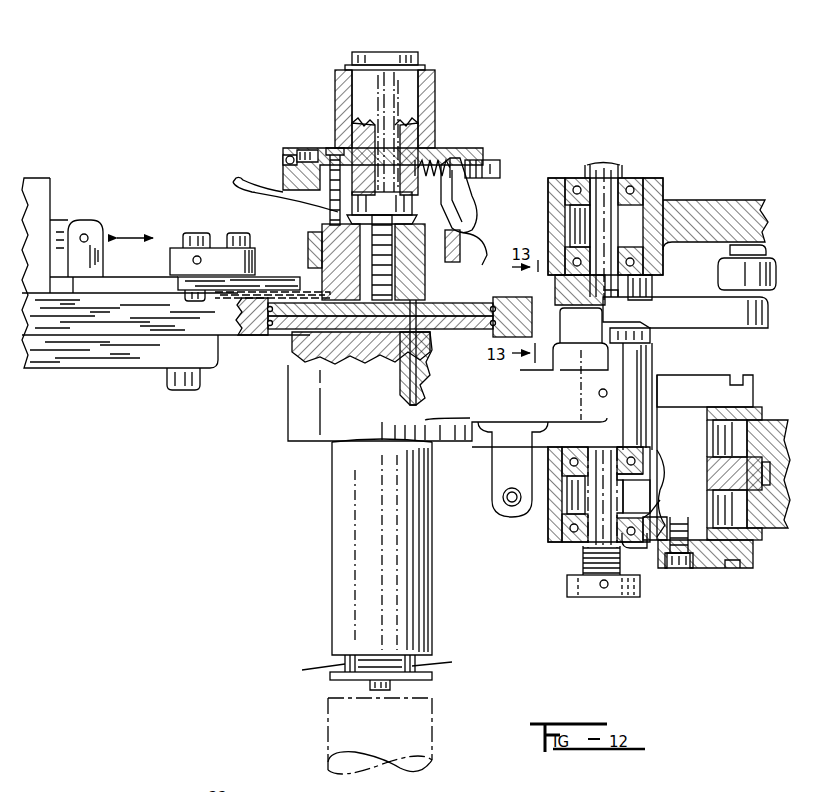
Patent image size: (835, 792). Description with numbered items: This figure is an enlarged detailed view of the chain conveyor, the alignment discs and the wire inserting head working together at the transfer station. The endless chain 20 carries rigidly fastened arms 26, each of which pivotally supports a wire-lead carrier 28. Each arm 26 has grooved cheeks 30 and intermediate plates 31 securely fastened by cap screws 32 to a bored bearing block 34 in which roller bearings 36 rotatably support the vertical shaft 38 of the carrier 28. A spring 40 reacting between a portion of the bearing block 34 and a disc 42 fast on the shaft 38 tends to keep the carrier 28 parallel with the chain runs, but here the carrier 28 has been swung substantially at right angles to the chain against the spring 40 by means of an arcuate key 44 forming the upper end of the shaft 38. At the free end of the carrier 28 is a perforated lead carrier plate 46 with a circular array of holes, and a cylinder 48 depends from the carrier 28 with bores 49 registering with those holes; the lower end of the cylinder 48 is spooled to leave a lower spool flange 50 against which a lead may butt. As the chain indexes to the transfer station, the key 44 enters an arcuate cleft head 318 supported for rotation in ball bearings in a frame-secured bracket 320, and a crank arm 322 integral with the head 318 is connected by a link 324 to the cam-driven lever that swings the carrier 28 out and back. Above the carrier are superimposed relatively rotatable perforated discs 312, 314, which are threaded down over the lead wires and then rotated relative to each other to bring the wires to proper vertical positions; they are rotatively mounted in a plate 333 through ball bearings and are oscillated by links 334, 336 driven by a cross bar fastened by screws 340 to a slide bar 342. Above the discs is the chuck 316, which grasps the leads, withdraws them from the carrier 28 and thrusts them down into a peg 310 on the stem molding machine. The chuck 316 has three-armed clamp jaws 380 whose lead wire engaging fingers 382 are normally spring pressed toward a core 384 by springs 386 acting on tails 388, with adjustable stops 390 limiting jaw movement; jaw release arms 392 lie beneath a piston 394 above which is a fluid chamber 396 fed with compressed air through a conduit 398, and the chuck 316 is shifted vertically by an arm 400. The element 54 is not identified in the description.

The endless chain 20 is at (706, 480).
The arm 26 is at (696, 598).
The wire-lead carrier 28 is at (272, 430).
The grooved cheek 30 is at (667, 380).
The intermediate plate 31 is at (760, 405).
The cap screw 32 is at (677, 570).
The bearing block 34 is at (548, 500).
The roller bearing 36 is at (598, 542).
The vertical shaft 38 is at (590, 556).
The spring 40 is at (622, 564).
The disc 42 is at (596, 598).
The key 44 is at (574, 335).
The lead carrier plate 46 is at (292, 337).
The cylinder 48 is at (338, 577).
The bore 49 is at (410, 402).
The spool flange 50 is at (432, 678).
The housing block 54 is at (774, 530).
The peg 310 is at (432, 768).
The upper perforated disc 312 is at (457, 302).
The lower perforated disc 314 is at (462, 332).
The chuck 316 is at (506, 114).
The cleft head 318 is at (556, 288).
The bracket 320 is at (690, 207).
The crank arm 322 is at (725, 322).
The link 324 is at (770, 262).
The plate 333 is at (502, 300).
The link 334 is at (308, 272).
The link 336 is at (218, 292).
The screw 340 is at (215, 235).
The slide bar 342 is at (128, 288).
The clamp jaw 380 is at (484, 224).
The finger 382 is at (455, 250).
The core 384 is at (368, 306).
The spring 386 is at (462, 150).
The tail 388 is at (468, 205).
The adjustable stop 390 is at (500, 170).
The jaw release arm 392 is at (402, 229).
The piston 394 is at (330, 208).
The fluid chamber 396 is at (428, 158).
The conduit 398 is at (240, 178).
The arm 400 is at (335, 96).